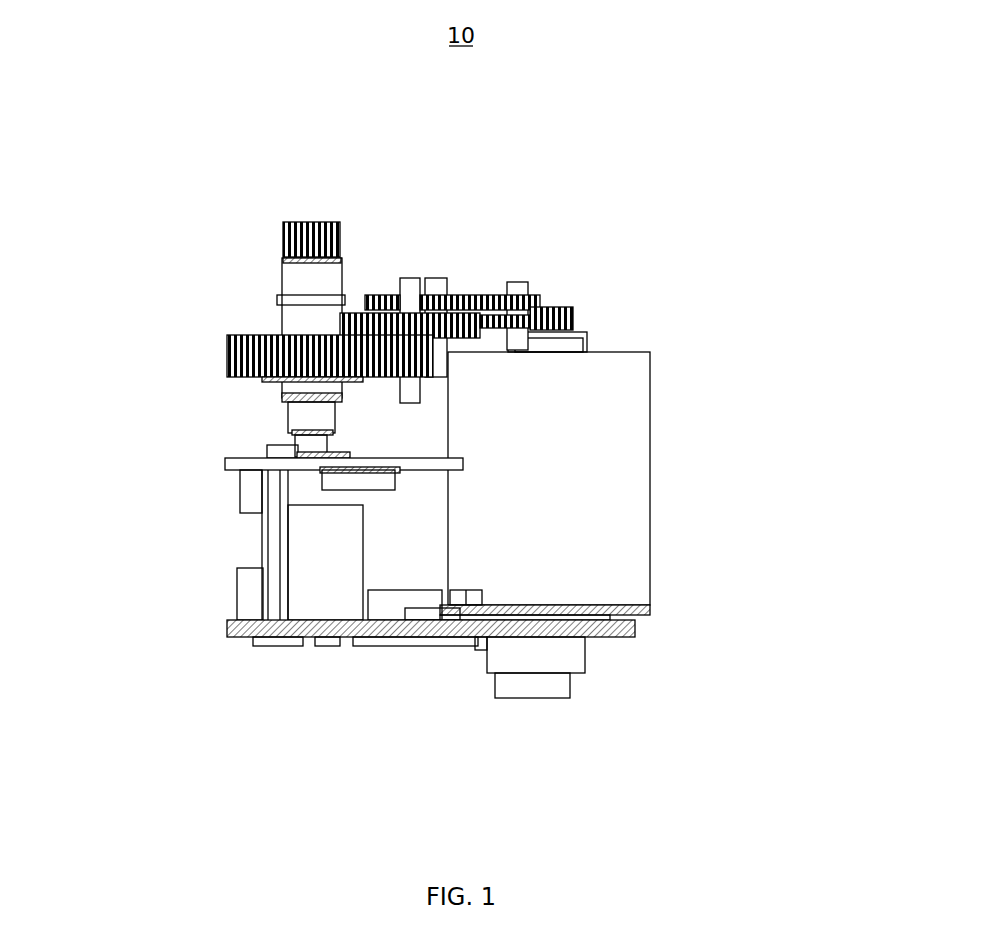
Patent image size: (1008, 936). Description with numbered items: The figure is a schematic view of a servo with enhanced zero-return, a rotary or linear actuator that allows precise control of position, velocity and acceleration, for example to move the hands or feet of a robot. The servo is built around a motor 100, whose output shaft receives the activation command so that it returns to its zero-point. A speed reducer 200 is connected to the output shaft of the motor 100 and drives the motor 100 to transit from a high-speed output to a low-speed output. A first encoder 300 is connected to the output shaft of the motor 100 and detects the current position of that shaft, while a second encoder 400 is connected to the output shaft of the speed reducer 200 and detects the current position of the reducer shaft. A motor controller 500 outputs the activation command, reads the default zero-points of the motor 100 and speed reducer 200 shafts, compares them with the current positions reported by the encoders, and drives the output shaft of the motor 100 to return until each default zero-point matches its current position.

The motor 100 is at (600, 447).
The speed reducer 200 is at (597, 615).
The first encoder 300 is at (558, 305).
The second encoder 400 is at (287, 450).
The motor controller 500 is at (332, 647).